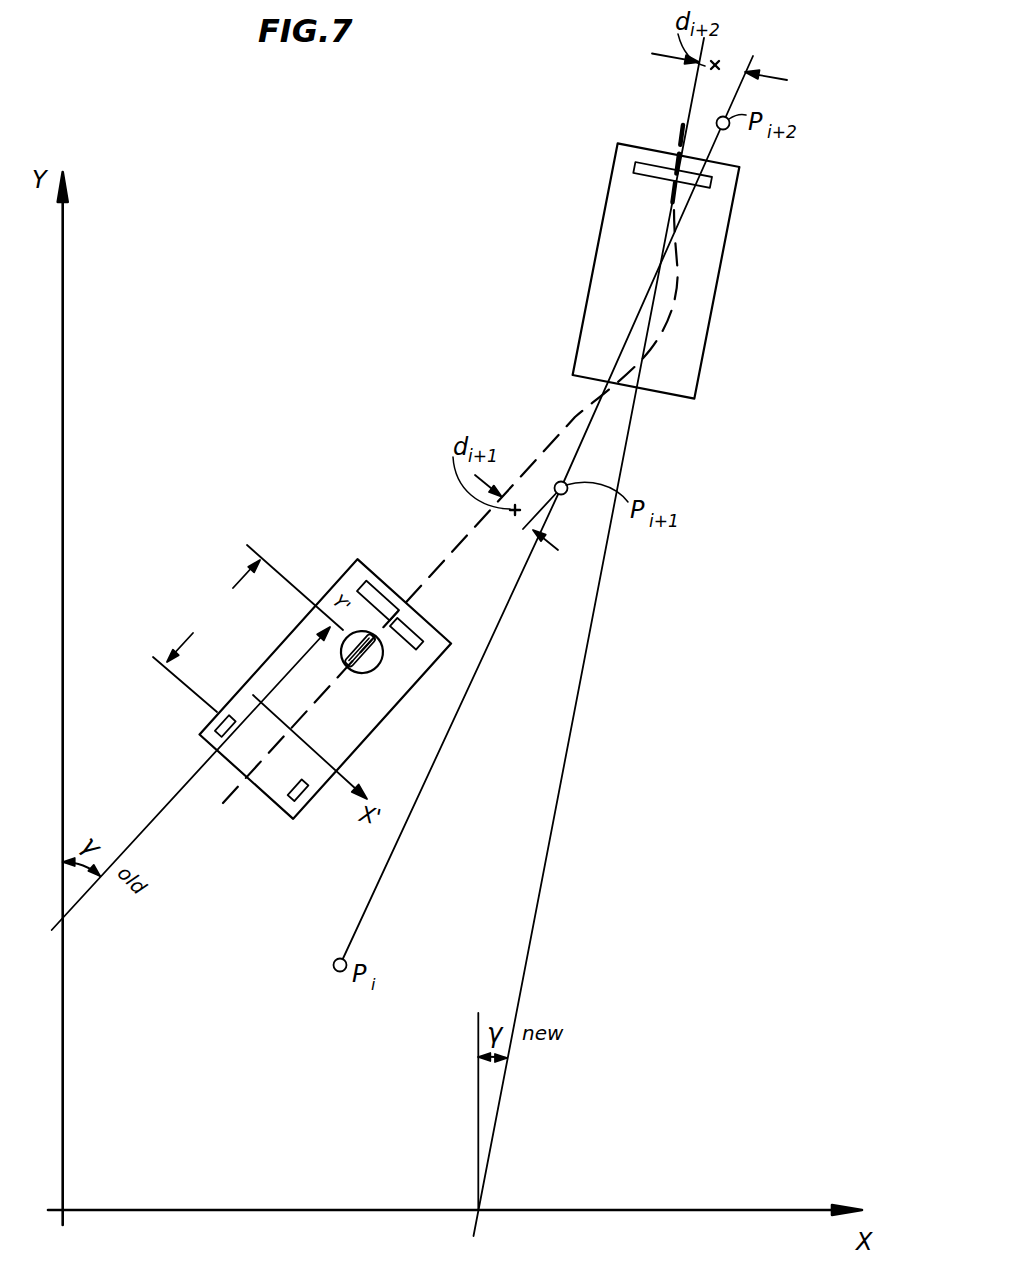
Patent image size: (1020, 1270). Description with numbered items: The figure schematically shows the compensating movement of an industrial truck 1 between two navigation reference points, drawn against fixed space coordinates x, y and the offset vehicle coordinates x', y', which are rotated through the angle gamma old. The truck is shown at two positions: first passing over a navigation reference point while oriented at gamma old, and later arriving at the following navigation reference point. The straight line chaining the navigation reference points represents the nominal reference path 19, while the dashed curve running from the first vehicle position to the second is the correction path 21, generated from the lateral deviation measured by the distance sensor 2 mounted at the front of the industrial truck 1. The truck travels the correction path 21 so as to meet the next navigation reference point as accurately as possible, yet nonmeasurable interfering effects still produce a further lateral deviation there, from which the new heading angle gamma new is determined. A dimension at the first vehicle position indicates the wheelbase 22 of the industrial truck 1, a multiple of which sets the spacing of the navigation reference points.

The industrial truck 1 is at (703, 227).
The distance sensor 2 is at (643, 168).
The nominal reference path 19 is at (395, 848).
The correction path 21 is at (670, 309).
The wheelbase 22 is at (248, 628).